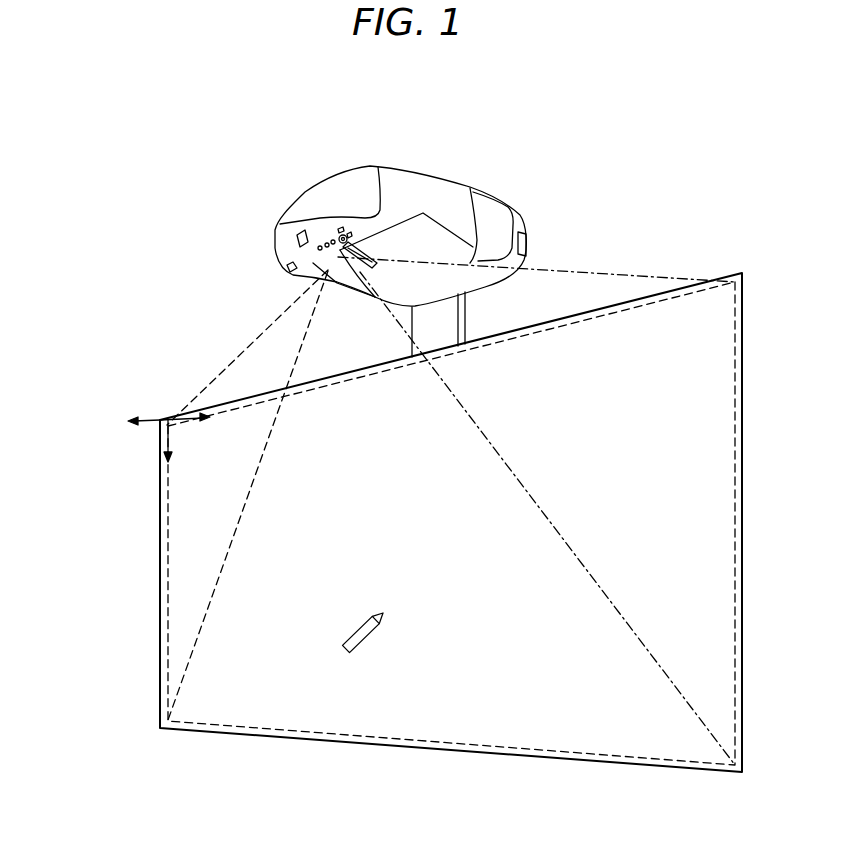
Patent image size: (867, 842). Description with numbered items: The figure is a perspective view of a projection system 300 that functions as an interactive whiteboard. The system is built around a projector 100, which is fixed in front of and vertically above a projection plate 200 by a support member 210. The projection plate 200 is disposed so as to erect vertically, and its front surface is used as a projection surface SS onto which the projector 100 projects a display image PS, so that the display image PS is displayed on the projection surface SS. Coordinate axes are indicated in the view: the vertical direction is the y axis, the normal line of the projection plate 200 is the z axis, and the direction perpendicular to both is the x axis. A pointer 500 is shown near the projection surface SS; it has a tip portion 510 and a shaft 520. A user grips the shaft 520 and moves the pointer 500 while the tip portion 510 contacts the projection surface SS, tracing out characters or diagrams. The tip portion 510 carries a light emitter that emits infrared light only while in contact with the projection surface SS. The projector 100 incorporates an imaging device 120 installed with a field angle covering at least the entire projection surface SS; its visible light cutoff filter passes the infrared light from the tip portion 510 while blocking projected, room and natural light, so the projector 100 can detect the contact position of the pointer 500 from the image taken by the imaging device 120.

The projection system 300 is at (140, 141).
The projector 100 is at (290, 217).
The imaging device 120 is at (297, 282).
The support member 210 is at (466, 312).
The projection plate 200 is at (160, 553).
The projection surface SS is at (160, 597).
The display image PS is at (158, 641).
The pointer 500 is at (448, 655).
The tip portion 510 is at (377, 619).
The shaft 520 is at (367, 643).